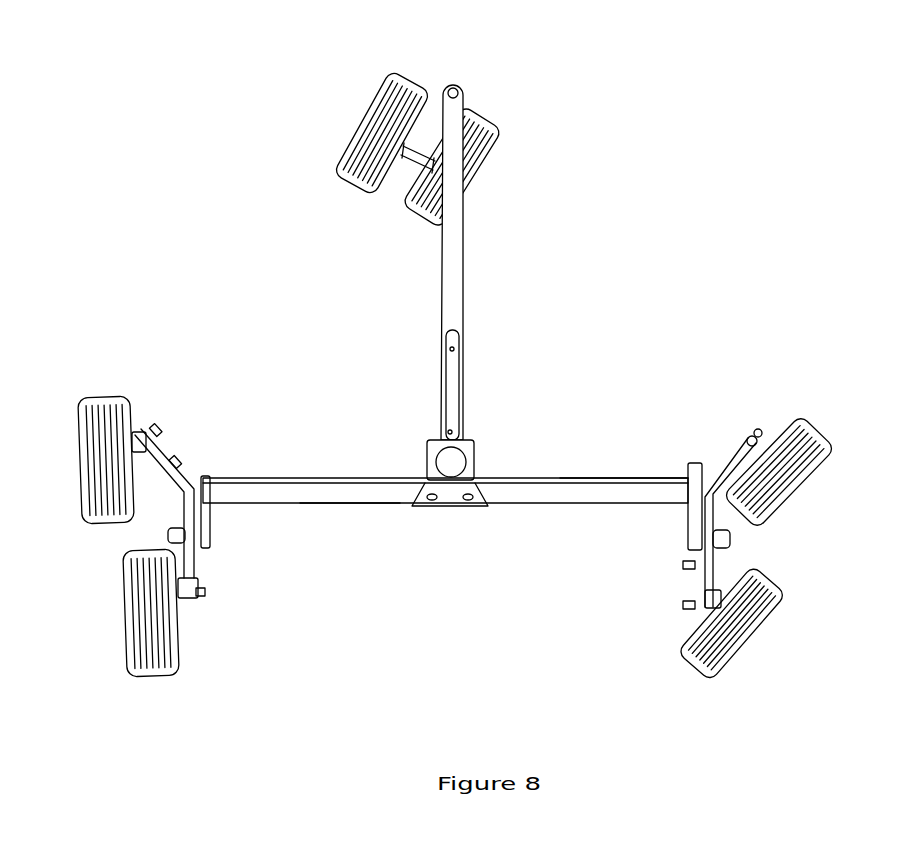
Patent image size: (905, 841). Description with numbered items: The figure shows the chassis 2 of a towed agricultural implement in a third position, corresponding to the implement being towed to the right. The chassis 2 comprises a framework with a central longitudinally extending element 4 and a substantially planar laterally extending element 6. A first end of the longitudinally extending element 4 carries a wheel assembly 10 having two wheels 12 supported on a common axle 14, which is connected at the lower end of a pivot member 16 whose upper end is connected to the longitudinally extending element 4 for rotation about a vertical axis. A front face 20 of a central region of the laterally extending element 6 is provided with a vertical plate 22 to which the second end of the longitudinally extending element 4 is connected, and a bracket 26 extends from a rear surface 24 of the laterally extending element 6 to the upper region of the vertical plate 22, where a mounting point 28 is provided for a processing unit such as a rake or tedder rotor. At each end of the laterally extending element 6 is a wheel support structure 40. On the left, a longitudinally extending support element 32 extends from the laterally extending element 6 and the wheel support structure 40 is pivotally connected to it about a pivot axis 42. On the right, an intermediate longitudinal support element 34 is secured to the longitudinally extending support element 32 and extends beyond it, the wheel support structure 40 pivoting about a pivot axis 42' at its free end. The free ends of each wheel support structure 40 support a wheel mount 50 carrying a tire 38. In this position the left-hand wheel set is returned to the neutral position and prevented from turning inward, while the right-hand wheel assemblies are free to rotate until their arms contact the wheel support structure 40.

The chassis 2 is at (622, 108).
The longitudinally extending element 4 is at (462, 273).
The laterally extending element 6 is at (597, 487).
The wheel assembly 10 is at (483, 83).
The wheels 12 is at (367, 127).
The common axle 14 is at (413, 157).
The pivot member 16 is at (440, 100).
The front face 20 is at (313, 482).
The vertical plate 22 is at (507, 480).
The rear surface 24 is at (323, 508).
The bracket 26 is at (450, 506).
The mounting point 28 is at (445, 465).
The longitudinally extending support element 32 is at (212, 515).
The intermediate longitudinal support element 34 is at (707, 477).
The tire 38 is at (108, 397).
The wheel support structure 40 is at (175, 463).
The pivot axis 42 is at (99, 544).
The pivot axis 42' is at (647, 542).
The wheel mount 50 is at (155, 430).